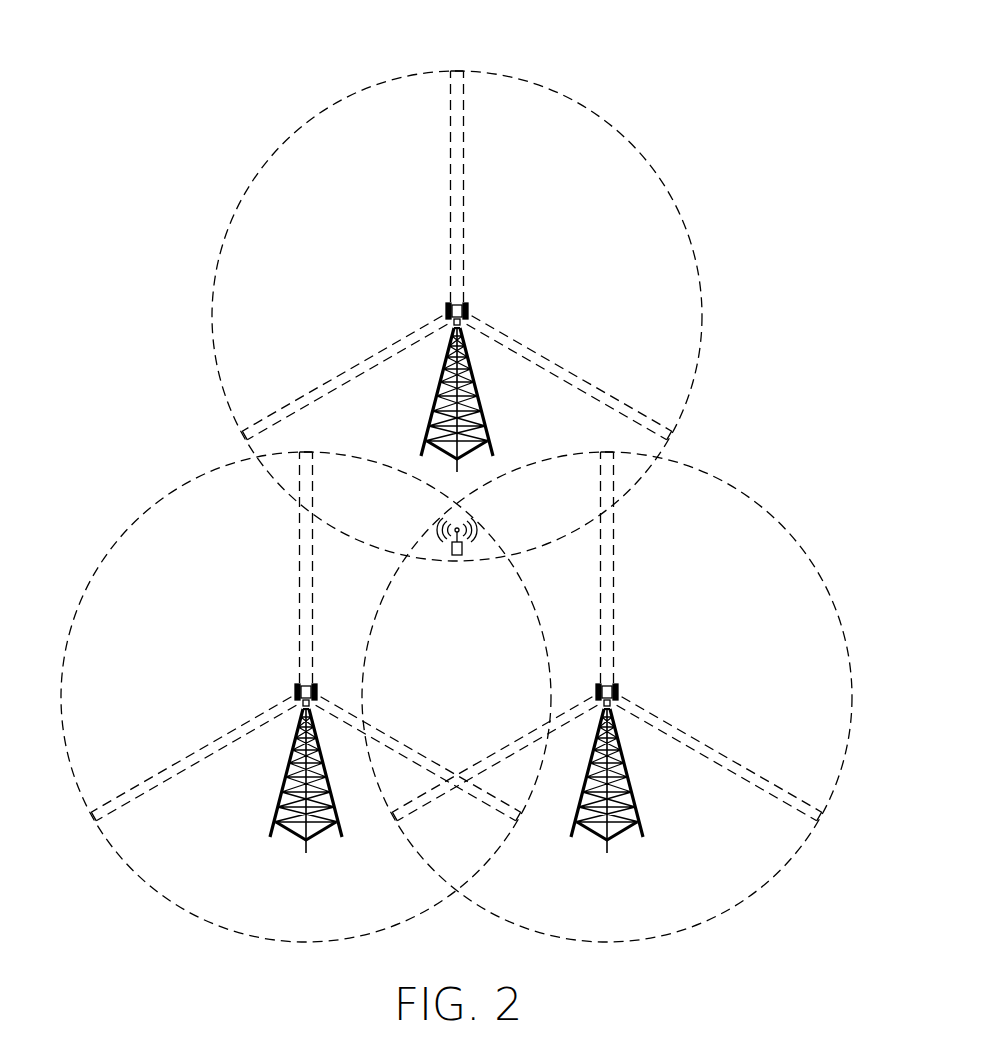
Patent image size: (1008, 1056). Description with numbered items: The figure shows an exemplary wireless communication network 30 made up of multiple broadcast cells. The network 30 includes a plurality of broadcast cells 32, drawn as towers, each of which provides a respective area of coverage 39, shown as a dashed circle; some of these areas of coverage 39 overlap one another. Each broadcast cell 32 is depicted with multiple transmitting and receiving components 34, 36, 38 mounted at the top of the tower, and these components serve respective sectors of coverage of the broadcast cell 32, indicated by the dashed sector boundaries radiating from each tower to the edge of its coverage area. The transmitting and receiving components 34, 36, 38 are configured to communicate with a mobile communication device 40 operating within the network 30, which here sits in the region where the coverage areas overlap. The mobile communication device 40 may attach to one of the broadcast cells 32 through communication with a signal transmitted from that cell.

The wireless communication network 30 is at (712, 74).
The broadcast cell 32 is at (428, 432).
The transmitting and receiving component 34 is at (462, 330).
The transmitting and receiving component 36 is at (445, 308).
The transmitting and receiving component 38 is at (470, 308).
The area of coverage 39 is at (665, 185).
The mobile communication device 40 is at (462, 548).